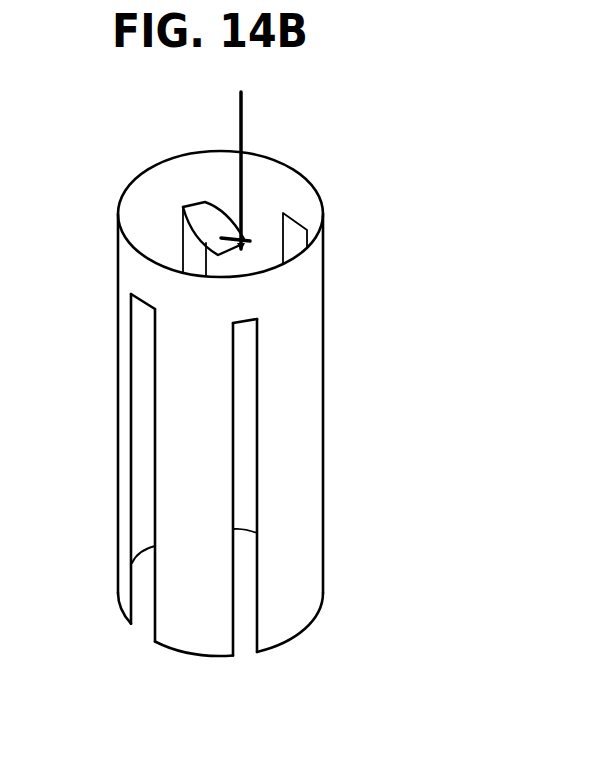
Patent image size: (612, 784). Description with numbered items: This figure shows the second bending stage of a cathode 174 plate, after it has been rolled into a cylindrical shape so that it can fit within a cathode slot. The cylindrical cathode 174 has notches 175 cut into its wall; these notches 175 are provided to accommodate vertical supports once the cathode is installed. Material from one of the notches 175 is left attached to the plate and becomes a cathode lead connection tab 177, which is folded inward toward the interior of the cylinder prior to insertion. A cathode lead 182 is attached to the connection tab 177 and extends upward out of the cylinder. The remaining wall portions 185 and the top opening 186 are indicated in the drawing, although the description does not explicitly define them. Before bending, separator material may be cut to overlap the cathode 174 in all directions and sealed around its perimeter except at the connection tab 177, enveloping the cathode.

The cathode 174 is at (298, 333).
The notches 175 is at (143, 618).
The cathode lead connection tab 177 is at (206, 228).
The cathode lead 182 is at (242, 113).
The wall segments between slots 185 is at (219, 268).
The interior cavity / top opening 186 is at (222, 177).